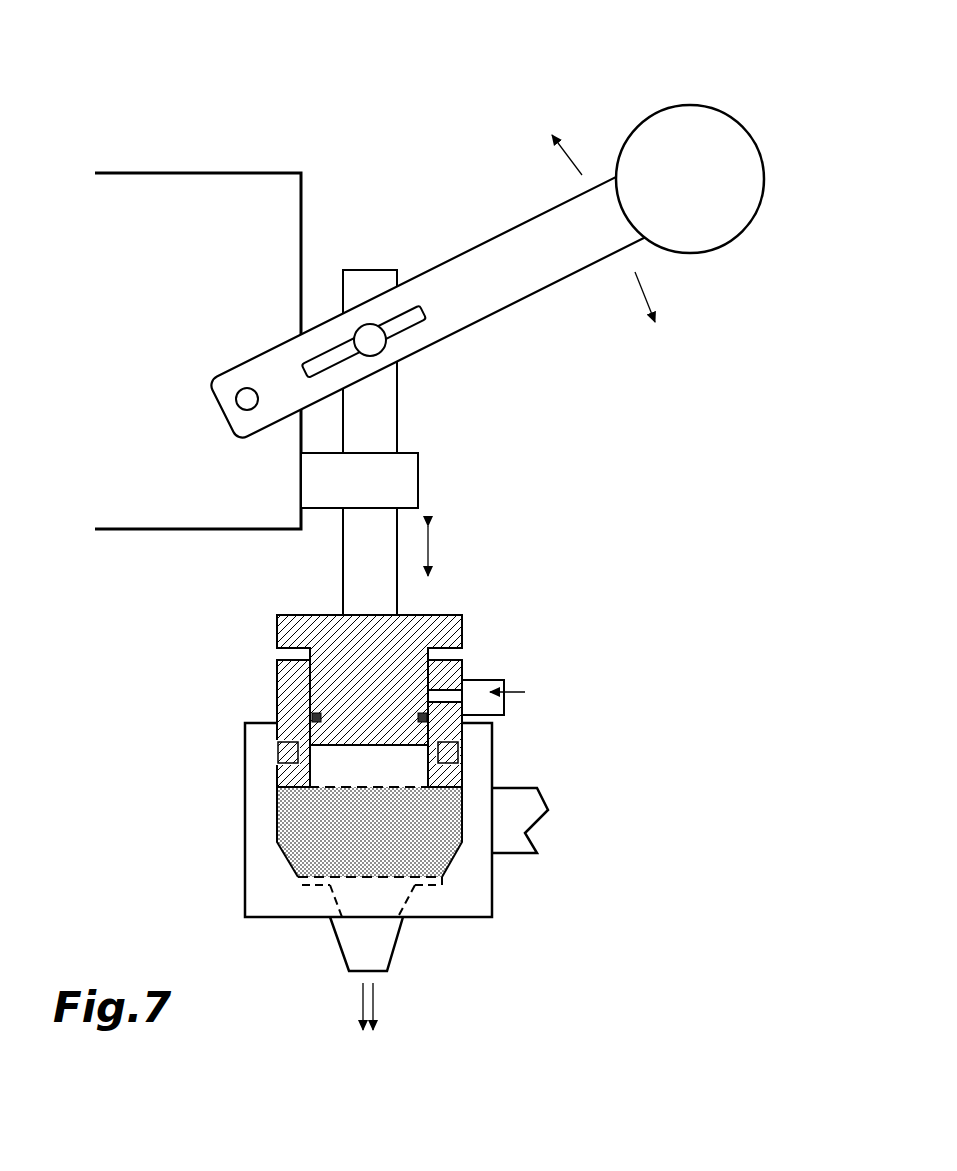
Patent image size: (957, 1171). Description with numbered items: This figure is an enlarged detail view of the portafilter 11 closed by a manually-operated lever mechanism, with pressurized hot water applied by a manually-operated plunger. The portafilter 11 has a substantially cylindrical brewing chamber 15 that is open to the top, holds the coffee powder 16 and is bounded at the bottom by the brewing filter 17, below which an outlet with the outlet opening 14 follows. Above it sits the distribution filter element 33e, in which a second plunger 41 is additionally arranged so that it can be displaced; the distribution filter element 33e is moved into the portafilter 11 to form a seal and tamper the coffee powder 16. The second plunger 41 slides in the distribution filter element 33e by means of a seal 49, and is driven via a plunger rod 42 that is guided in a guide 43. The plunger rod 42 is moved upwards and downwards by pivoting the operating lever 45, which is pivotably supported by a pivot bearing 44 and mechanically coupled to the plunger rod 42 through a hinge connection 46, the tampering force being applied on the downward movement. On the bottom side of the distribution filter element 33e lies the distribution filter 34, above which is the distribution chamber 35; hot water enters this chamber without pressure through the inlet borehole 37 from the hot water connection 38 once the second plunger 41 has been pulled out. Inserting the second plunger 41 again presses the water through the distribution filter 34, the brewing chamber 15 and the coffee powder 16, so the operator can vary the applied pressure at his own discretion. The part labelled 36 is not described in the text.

The portafilter 11 is at (528, 923).
The outlet opening 14 is at (387, 950).
The brewing chamber 15 is at (277, 843).
The coffee powder 16 is at (427, 853).
The brewing filter 17 is at (383, 877).
The distribution filter element 33e is at (248, 688).
The distribution filter 34 is at (340, 788).
The distribution chamber 35 is at (385, 767).
The inserts 36 is at (278, 757).
The inlet borehole 37 is at (463, 670).
The hot water connection 38 is at (507, 703).
The second plunger 41 is at (345, 697).
The plunger rod 42 is at (363, 593).
The guide 43 is at (398, 485).
The pivot bearing 44 is at (245, 398).
The operating lever 45 is at (507, 248).
The hinge connection 46 is at (366, 338).
The seal 49 is at (277, 718).